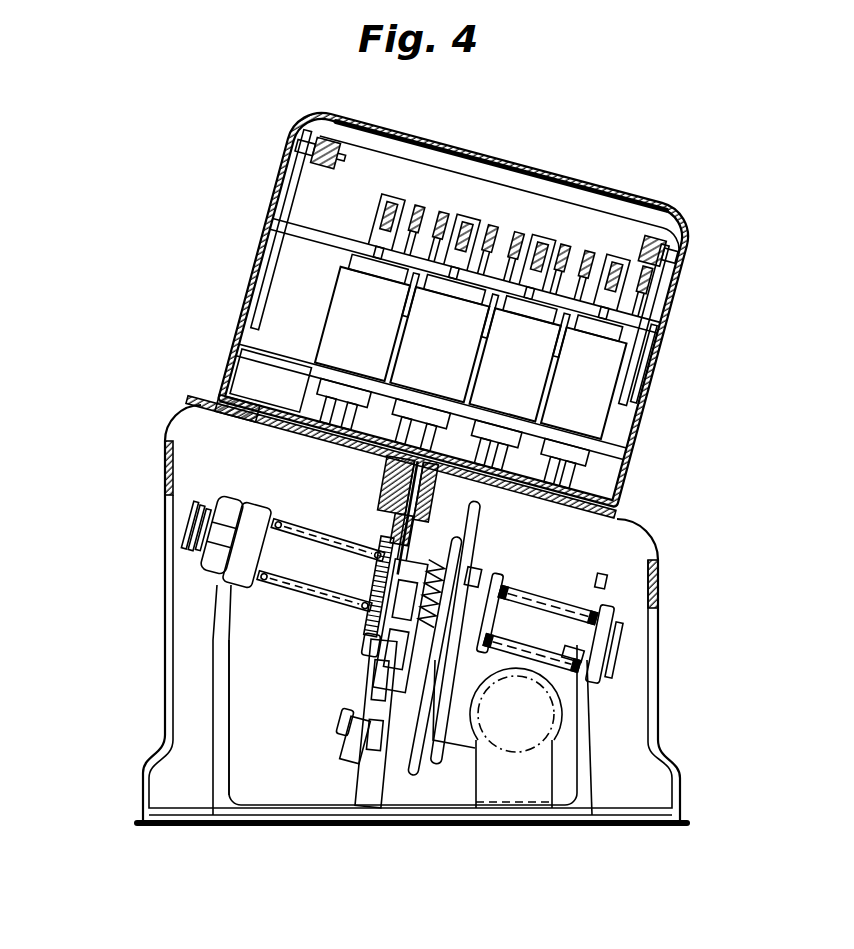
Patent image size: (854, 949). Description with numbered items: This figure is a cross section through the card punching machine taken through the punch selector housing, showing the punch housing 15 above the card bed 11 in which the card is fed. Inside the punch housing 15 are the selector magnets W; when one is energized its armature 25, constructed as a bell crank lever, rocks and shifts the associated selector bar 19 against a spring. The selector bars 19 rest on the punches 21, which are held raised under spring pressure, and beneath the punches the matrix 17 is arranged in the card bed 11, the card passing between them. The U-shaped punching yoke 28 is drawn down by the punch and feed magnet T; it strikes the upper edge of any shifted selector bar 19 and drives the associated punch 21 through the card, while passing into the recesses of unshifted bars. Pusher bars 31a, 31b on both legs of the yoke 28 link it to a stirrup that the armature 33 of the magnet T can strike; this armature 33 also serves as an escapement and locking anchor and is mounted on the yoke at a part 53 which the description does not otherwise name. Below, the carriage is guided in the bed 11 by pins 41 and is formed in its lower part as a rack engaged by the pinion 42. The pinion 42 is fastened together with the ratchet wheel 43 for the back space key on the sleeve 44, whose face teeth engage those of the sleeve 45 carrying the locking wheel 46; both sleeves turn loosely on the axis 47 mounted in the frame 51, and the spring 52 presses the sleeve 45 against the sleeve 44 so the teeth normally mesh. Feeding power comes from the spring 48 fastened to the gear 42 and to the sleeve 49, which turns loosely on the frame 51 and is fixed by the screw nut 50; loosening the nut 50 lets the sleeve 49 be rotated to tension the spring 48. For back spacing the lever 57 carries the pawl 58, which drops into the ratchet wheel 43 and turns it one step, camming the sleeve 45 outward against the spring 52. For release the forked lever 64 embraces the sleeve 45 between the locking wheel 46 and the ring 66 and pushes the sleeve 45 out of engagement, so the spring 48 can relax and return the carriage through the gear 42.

The card bed 11 is at (178, 416).
The punch housing 15 is at (682, 291).
The matrix 17 is at (265, 400).
The selector bars 19 is at (553, 245).
The punches 21 is at (343, 398).
The armature 25 is at (383, 200).
The punching yoke 28 is at (392, 174).
The pusher bar 31a is at (648, 316).
The pusher bar 31b is at (297, 205).
The armature / escapement 33 is at (471, 520).
The pins 41 is at (398, 498).
The pinion 42 is at (364, 652).
The ratchet wheel 43 is at (375, 622).
The sleeve 44 is at (400, 582).
The sleeve 45 is at (408, 605).
The locking wheel 46 is at (477, 550).
The axis 47 is at (543, 630).
The spring 48 is at (330, 593).
The sleeve 49 is at (255, 546).
The screw nut 50 is at (218, 540).
The frame 51 is at (220, 613).
The spring 52 is at (613, 663).
The motor mount 53 is at (458, 732).
The lever 57 is at (372, 737).
The pawl 58 is at (385, 652).
The lever 64 is at (576, 658).
The ring 66 is at (604, 585).
The selector magnets W is at (352, 323).
The punch and feed magnet T is at (556, 736).